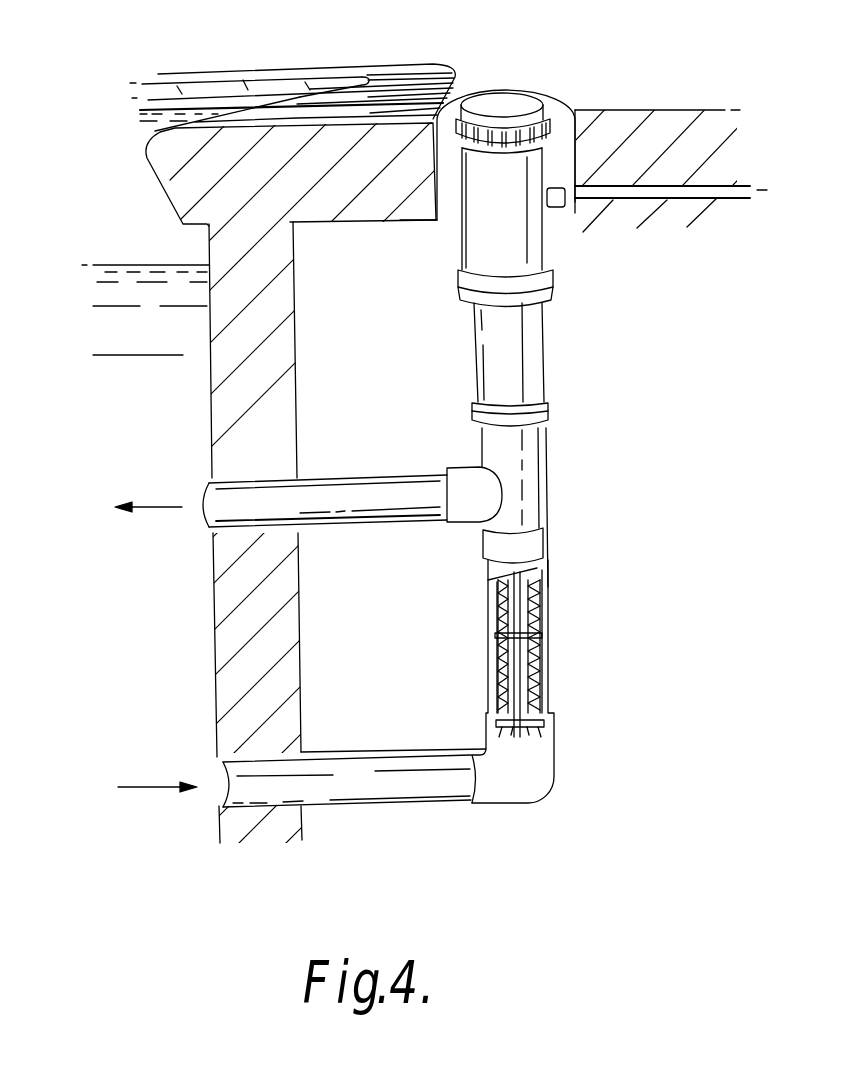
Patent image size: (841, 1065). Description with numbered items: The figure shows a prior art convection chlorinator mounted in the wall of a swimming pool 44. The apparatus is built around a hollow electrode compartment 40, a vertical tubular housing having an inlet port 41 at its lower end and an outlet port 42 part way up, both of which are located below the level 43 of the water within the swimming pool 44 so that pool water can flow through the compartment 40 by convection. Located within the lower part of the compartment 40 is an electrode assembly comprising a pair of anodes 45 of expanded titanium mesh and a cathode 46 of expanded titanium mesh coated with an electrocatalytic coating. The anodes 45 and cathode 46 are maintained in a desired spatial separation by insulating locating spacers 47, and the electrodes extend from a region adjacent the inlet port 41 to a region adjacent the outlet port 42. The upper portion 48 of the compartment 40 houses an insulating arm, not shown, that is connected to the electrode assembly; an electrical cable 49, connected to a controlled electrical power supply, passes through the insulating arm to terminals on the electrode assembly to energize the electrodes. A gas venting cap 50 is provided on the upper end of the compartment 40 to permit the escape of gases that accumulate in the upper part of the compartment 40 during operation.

The hollow electrode compartment 40 is at (530, 452).
The inlet port 41 is at (443, 797).
The outlet port 42 is at (345, 482).
The level of the water 43 is at (138, 265).
The swimming pool 44 is at (126, 437).
The anodes 45 is at (498, 662).
The cathode 46 is at (520, 698).
The insulating locating spacers 47 is at (541, 634).
The upper portion 48 is at (517, 215).
The electrical cable 49 is at (677, 192).
The gas venting cap 50 is at (500, 100).